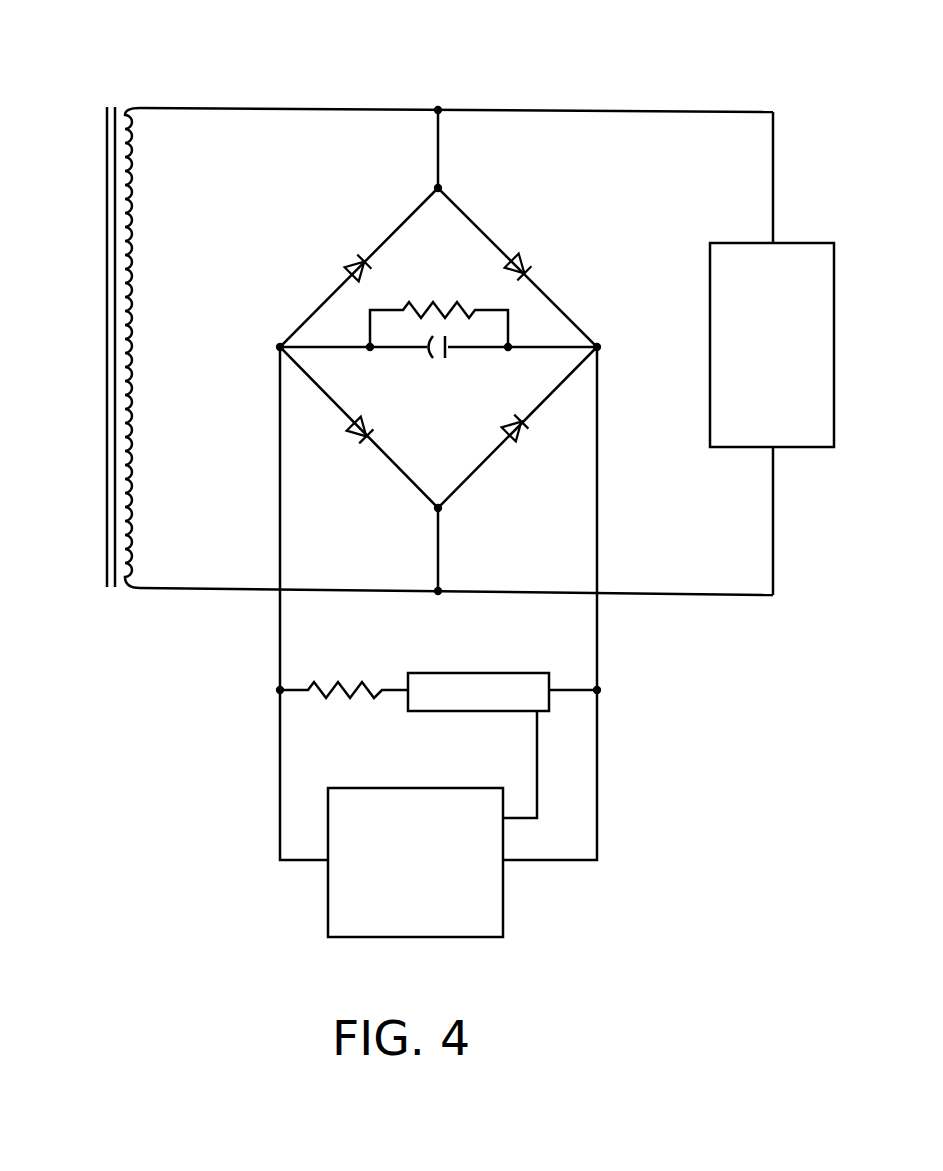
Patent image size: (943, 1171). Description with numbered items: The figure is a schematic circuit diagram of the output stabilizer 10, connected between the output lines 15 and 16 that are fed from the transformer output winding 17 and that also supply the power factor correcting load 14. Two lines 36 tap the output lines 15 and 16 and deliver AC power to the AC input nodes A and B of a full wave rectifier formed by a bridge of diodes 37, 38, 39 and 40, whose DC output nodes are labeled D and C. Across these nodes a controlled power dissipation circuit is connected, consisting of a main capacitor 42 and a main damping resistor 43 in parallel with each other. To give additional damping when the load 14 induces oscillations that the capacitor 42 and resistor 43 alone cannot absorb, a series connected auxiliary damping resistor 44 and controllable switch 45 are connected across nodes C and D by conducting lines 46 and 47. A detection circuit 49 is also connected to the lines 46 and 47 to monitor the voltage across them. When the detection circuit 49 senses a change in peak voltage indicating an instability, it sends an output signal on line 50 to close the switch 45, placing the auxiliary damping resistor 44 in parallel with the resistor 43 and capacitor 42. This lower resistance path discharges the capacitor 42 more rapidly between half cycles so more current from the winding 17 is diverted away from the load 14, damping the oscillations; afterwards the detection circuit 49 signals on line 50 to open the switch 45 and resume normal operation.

The output stabilizer 10 is at (578, 244).
The power factor correcting load 14 is at (717, 274).
The output line 15 is at (347, 108).
The output line 16 is at (198, 590).
The output winding 17 is at (134, 215).
The lines 36 is at (440, 144).
The diode 37 is at (358, 260).
The diode 38 is at (553, 220).
The diode 39 is at (520, 440).
The diode 40 is at (356, 428).
The main capacitor 42 is at (448, 352).
The main damping resistor 43 is at (442, 272).
The auxiliary damping resistor 44 is at (368, 685).
The controllable switch 45 is at (550, 682).
The conducting line 46 is at (278, 515).
The conducting line 47 is at (597, 555).
The detection circuit 49 is at (328, 802).
The line 50 is at (535, 746).